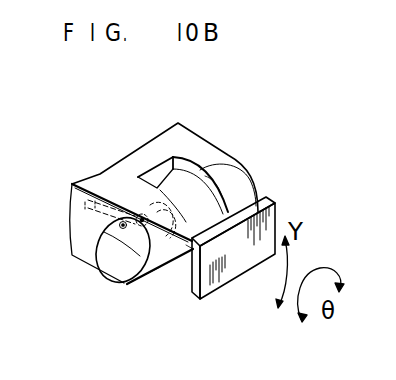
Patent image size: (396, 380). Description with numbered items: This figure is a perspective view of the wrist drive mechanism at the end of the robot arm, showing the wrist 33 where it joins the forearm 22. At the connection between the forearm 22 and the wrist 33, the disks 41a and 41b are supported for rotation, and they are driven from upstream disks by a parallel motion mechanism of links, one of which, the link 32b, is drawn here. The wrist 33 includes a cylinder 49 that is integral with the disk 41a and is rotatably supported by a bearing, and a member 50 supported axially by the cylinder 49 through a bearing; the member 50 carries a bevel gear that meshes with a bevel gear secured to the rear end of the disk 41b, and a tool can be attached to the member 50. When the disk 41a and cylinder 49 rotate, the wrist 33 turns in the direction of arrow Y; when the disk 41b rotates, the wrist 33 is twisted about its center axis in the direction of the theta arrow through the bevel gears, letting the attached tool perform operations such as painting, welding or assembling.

The forearm 22 is at (204, 149).
The link 32b is at (103, 190).
The cylinder 49 is at (248, 171).
The disk 41a is at (230, 190).
The member 50 is at (270, 200).
The disk 41b is at (156, 280).
The wrist 33 is at (173, 281).